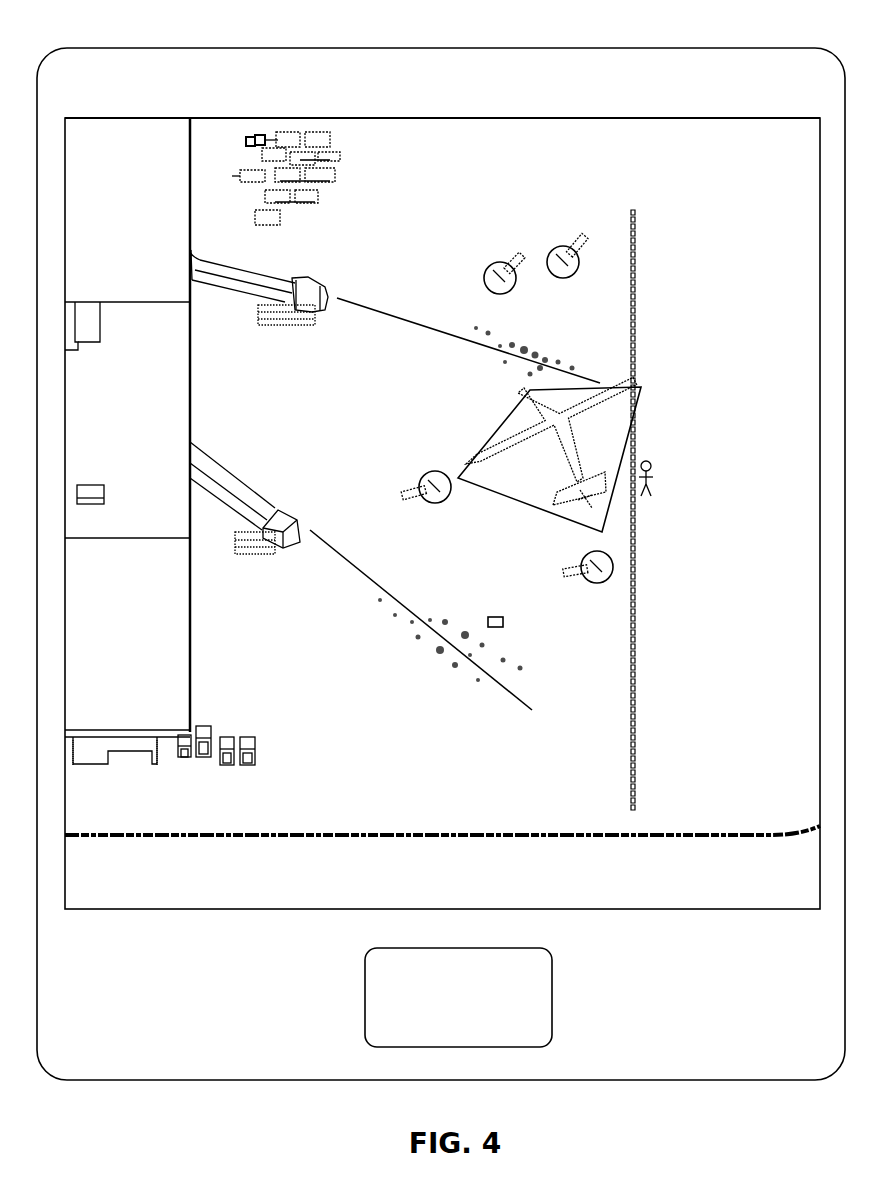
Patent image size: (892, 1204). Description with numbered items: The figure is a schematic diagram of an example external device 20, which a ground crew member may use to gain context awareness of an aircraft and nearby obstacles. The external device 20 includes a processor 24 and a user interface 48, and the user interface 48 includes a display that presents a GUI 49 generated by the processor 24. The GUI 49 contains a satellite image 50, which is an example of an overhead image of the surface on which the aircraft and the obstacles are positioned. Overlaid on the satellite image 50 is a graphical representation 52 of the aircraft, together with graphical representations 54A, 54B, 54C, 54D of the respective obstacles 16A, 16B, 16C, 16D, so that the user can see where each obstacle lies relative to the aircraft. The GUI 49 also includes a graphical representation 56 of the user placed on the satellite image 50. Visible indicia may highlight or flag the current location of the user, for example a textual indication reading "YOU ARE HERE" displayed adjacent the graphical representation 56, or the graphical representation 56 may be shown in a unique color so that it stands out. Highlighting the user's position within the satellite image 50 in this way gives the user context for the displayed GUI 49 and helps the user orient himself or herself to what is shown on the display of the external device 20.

The external device 20 is at (725, 48).
The processor 24 is at (446, 1020).
The user interface 48 is at (665, 118).
The GUI 49 is at (745, 115).
The satellite image 50 is at (733, 260).
The graphical representation of aircraft 52 is at (615, 378).
The graphical representation of obstacle 54A is at (420, 476).
The graphical representation of obstacle 54B is at (505, 290).
The graphical representation of obstacle 54C is at (570, 267).
The graphical representation of obstacle 54D is at (600, 583).
The obstacle 16A is at (405, 497).
The obstacle 16B is at (518, 250).
The obstacle 16C is at (583, 232).
The obstacle 16D is at (562, 575).
The graphical representation of user 56 is at (645, 461).